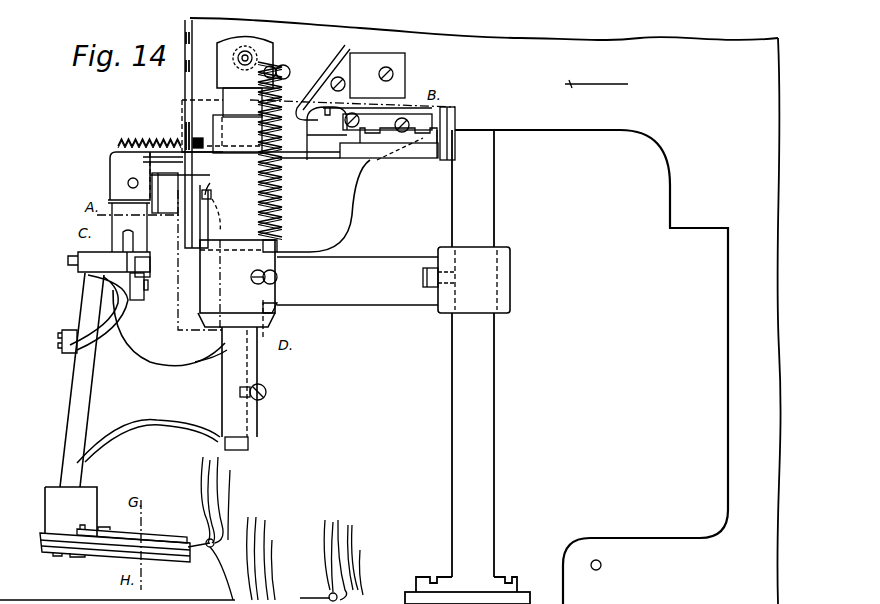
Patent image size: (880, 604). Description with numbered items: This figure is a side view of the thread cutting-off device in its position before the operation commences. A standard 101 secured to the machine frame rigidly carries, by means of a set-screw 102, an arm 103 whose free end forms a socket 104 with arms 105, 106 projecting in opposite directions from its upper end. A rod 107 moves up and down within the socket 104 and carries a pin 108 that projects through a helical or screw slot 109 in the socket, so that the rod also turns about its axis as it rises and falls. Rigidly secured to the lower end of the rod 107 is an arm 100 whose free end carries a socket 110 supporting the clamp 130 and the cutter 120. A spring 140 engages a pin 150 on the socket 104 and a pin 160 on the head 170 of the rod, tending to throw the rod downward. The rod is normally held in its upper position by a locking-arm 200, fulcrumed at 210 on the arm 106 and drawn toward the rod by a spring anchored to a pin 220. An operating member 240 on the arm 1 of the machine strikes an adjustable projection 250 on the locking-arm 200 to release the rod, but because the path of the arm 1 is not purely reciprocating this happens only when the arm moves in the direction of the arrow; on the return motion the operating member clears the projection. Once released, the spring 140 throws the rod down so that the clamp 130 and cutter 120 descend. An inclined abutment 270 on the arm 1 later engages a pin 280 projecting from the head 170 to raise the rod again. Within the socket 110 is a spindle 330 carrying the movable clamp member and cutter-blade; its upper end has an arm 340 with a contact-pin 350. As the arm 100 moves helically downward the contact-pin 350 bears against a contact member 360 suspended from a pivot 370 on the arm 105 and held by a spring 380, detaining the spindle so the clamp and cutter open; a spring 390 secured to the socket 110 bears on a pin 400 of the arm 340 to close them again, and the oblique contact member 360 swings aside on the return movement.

The arm 1 is at (485, 311).
The arm 100 is at (188, 417).
The standard 101 is at (482, 403).
The set-screw 102 is at (430, 289).
The arm 103 is at (363, 297).
The socket 104 is at (220, 123).
The arm 105 is at (167, 173).
The arm 106 is at (322, 168).
The rod 107 is at (230, 95).
The pin 108 is at (213, 200).
The helical or screw slot 109 is at (213, 193).
The socket 110 is at (72, 423).
The cutter 120 is at (110, 548).
The clamp 130 is at (165, 542).
The spring 140 is at (278, 202).
The pin 150 is at (277, 275).
The pin 160 is at (290, 73).
The head 170 is at (222, 48).
The locking-arm 200 is at (375, 145).
The fulcrum 210 is at (360, 119).
The pin 220 is at (190, 140).
The operating member 240 is at (457, 107).
The projection 250 is at (422, 142).
The inclined abutment 270 is at (350, 77).
The pin 280 is at (246, 50).
The spindle 330 is at (100, 250).
The arm 340 is at (105, 262).
The contact-pin 350 is at (150, 258).
The contact member 360 is at (135, 242).
The pivot 370 is at (128, 182).
The spring 380 is at (143, 140).
The spring 390 is at (77, 350).
The pin 400 is at (140, 300).